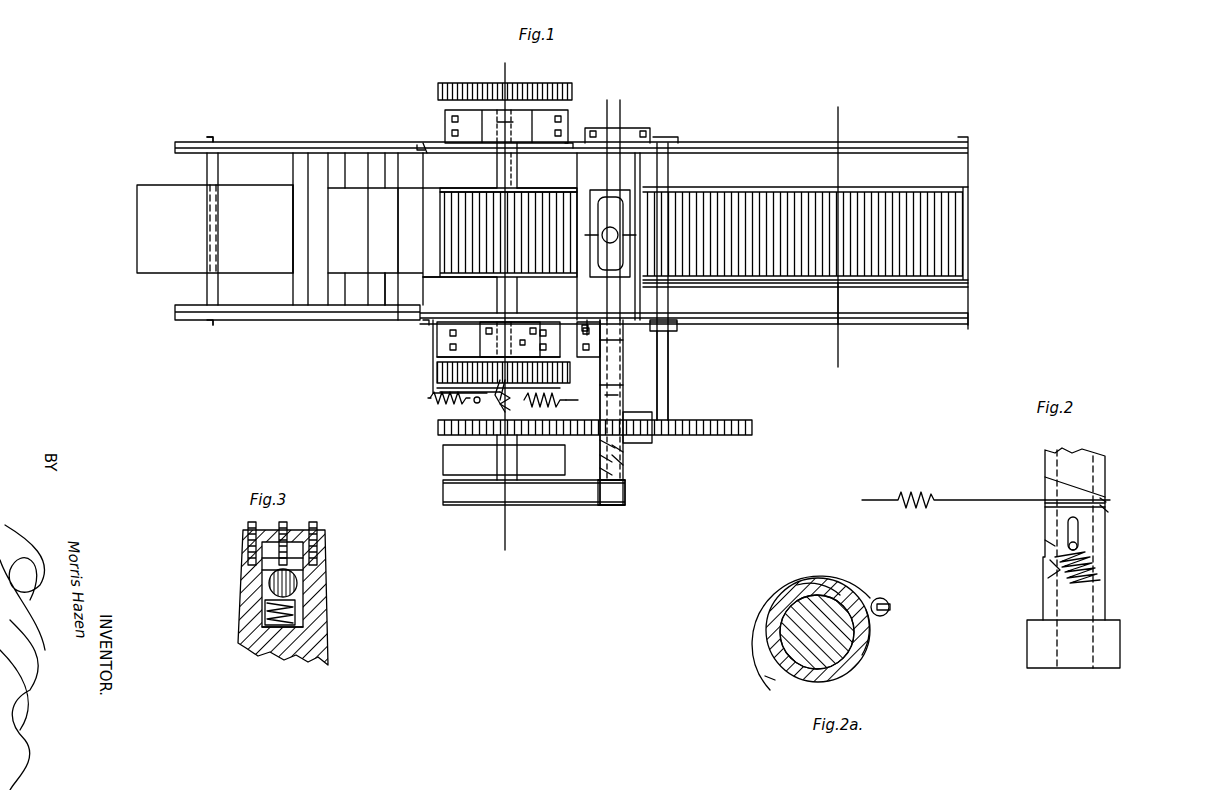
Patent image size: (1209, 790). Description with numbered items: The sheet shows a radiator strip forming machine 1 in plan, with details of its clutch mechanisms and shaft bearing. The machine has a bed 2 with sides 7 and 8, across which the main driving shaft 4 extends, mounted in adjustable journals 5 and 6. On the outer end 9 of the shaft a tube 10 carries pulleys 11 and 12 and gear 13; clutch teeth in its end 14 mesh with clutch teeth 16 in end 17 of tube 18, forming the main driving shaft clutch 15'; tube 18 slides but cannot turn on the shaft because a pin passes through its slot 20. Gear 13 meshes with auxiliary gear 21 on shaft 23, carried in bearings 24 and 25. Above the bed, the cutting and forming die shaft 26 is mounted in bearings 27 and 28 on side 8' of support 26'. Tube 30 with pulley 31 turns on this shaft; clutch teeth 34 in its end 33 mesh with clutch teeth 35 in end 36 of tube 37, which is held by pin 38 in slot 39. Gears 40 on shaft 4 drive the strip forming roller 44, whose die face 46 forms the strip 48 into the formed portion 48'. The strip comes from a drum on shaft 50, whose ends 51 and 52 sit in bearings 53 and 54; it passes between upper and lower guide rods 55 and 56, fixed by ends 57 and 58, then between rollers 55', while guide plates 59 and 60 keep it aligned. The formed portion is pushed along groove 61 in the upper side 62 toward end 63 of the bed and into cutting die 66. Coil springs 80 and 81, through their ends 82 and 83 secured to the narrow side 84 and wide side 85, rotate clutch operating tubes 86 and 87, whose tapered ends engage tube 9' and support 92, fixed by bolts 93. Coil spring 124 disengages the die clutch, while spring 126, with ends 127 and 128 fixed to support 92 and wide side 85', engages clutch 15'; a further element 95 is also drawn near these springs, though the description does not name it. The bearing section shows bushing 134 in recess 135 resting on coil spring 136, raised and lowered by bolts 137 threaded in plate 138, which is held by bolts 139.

In FIG. 1, the radiator strip forming machine 1 is at (792, 150).
In FIG. 1, the bed 2 is at (778, 326).
In FIG. 1, the main driving shaft 4 is at (613, 92).
In FIG. 2A, the main driving shaft 4 is at (800, 610).
In FIG. 1, the adjustable journal 5 is at (844, 366).
In FIG. 3, the adjustable journal 5 is at (326, 538).
In FIG. 1, the adjustable journal 6 is at (437, 345).
In FIG. 1, the side of the bed 7 is at (567, 142).
In FIG. 3, the side of the bed 7 is at (312, 650).
In FIG. 1, the side of the bed 8 is at (380, 327).
In FIG. 1, the side of support 8' is at (608, 317).
In FIG. 1, the outer end of shaft 9 is at (569, 401).
In FIG. 1, the tube 9' is at (625, 412).
In FIG. 2, the tube 9' is at (1082, 548).
In FIG. 1, the tube 10 is at (497, 440).
In FIG. 1, the wheel or pulley 11 is at (443, 466).
In FIG. 1, the wheel or pulley 12 is at (443, 508).
In FIG. 1, the gear 13 is at (498, 412).
In FIG. 1, the end of tube 14 is at (500, 68).
In FIG. 1, the main driving shaft clutch 15' is at (486, 455).
In FIG. 1, the clutch teeth 16 is at (511, 401).
In FIG. 1, the end of tube 17 is at (428, 400).
In FIG. 1, the tube 18 is at (480, 396).
In FIG. 1, the slot 20 is at (480, 390).
In FIG. 1, the auxiliary gear 21 is at (752, 428).
In FIG. 1, the shaft 23 is at (670, 386).
In FIG. 1, the bearing 24 is at (678, 140).
In FIG. 1, the bearing 25 is at (678, 327).
In FIG. 1, the cutting and forming die shaft 26 is at (642, 212).
In FIG. 1, the support 26' is at (678, 281).
In FIG. 1, the bearing 27 is at (620, 130).
In FIG. 1, the bearing 28 is at (623, 368).
In FIG. 1, the tube 30 is at (625, 480).
In FIG. 1, the pulley 31 is at (630, 510).
In FIG. 2, the pulley 31 is at (1120, 650).
In FIG. 1, the end of tube 33 is at (600, 466).
In FIG. 1, the clutch teeth 34 is at (605, 470).
In FIG. 2, the clutch teeth 34 is at (1048, 572).
In FIG. 1, the clutch teeth 35 is at (628, 462).
In FIG. 1, the end of tube 36 is at (623, 458).
In FIG. 1, the tube 37 is at (600, 460).
In FIG. 2, the tube 37 is at (1045, 543).
In FIG. 1, the pin 38 is at (652, 425).
In FIG. 2, the pin 38 is at (1078, 542).
In FIG. 2, the slot 39 is at (1068, 532).
In FIG. 1, the gear 40 is at (560, 90).
In FIG. 1, the strip forming roller 44 is at (543, 187).
In FIG. 1, the die face 46 is at (500, 250).
In FIG. 1, the strip 48 is at (442, 276).
In FIG. 1, the formed portion of strip 48' is at (832, 233).
In FIG. 1, the shaft 50 is at (207, 172).
In FIG. 1, the end of shaft 51 is at (220, 166).
In FIG. 1, the end of shaft 52 is at (220, 300).
In FIG. 1, the bearing 53 is at (205, 150).
In FIG. 1, the bearing 54 is at (207, 305).
In FIG. 1, the upper guide rod 55 is at (375, 229).
In FIG. 1, the roller 55' is at (410, 230).
In FIG. 1, the lower guide rod 56 is at (384, 168).
In FIG. 1, the end of guide rod 57 is at (328, 155).
In FIG. 1, the end of guide rod 58 is at (372, 312).
In FIG. 1, the guide plate 59 is at (470, 165).
In FIG. 1, the guide plate 60 is at (400, 280).
In FIG. 1, the groove 61 is at (968, 282).
In FIG. 1, the upper side of the bed 62 is at (885, 326).
In FIG. 1, the end of the bed 63 is at (968, 316).
In FIG. 1, the cutting die 66 is at (600, 210).
In FIG. 2, the coil spring 80 is at (916, 494).
In FIG. 2A, the coil spring 81 is at (890, 608).
In FIG. 1, the end of coil spring 82 is at (625, 412).
In FIG. 2, the end of coil spring 82 is at (1108, 508).
In FIG. 2A, the end of coil spring 83 is at (888, 603).
In FIG. 2, the narrow side of tube 84 is at (1045, 508).
In FIG. 1, the wide side of tube 85 is at (526, 361).
In FIG. 2, the wide side of tube 85 is at (1052, 482).
In FIG. 2A, the wide side of tube 85' is at (843, 630).
In FIG. 1, the clutch operating tube 86 is at (623, 397).
In FIG. 2, the clutch operating tube 86 is at (1105, 496).
In FIG. 1, the clutch operating tube 87 is at (505, 385).
In FIG. 2A, the clutch operating tube 87 is at (822, 585).
In FIG. 2, the clutch operating tube 87 is at (1108, 500).
In FIG. 1, the support 92 is at (588, 340).
In FIG. 1, the bolts 93 is at (425, 326).
In FIG. 1, the spring 95 is at (545, 404).
In FIG. 2, the coil spring 124 is at (1100, 567).
In FIG. 1, the spring 126 is at (468, 400).
In FIG. 2A, the spring 126 is at (773, 687).
In FIG. 1, the end of spring 127 is at (414, 397).
In FIG. 2A, the end of spring 128 is at (878, 630).
In FIG. 3, the bushing 134 is at (283, 585).
In FIG. 3, the recess 135 is at (300, 616).
In FIG. 3, the coil spring 136 is at (265, 622).
In FIG. 3, the bolts 137 is at (286, 522).
In FIG. 3, the plate 138 is at (317, 528).
In FIG. 3, the bolts 139 is at (248, 526).